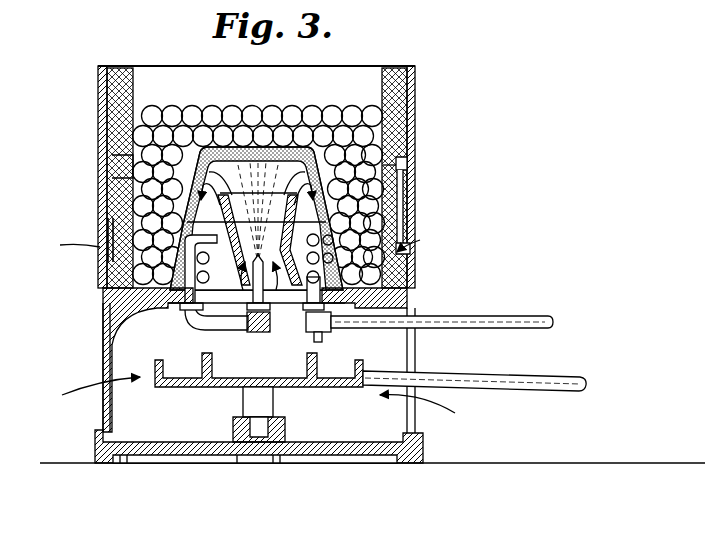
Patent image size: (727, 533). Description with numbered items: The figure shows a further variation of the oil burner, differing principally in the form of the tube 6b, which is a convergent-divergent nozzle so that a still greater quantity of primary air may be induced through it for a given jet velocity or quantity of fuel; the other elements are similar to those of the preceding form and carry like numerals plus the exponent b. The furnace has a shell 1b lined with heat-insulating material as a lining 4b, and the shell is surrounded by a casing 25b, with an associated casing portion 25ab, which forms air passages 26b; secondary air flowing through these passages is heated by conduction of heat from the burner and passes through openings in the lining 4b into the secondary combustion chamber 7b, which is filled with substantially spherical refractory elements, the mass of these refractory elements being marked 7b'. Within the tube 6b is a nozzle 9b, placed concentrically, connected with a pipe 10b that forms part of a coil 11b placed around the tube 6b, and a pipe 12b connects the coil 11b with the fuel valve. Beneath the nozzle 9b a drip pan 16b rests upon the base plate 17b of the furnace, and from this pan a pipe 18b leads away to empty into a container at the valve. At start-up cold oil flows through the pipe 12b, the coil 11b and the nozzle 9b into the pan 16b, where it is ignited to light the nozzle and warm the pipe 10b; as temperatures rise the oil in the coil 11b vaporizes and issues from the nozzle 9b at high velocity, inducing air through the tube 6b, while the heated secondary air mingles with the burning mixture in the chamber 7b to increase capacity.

The shell 1b is at (409, 135).
The lining 4b is at (398, 72).
The secondary combustion chamber 7b is at (258, 113).
The balls (side layers) 7b' is at (259, 178).
The casing 25b is at (400, 162).
The air passages 26b is at (403, 228).
The lower bracket 25ab is at (410, 257).
The coil 11b is at (318, 255).
The nozzle 9b is at (242, 305).
The tube 6b is at (308, 323).
The pipe 10b is at (190, 322).
The pipe 12b is at (518, 318).
The drip pan 16b is at (220, 387).
The pipe 18b is at (540, 390).
The base plate 17b is at (207, 455).